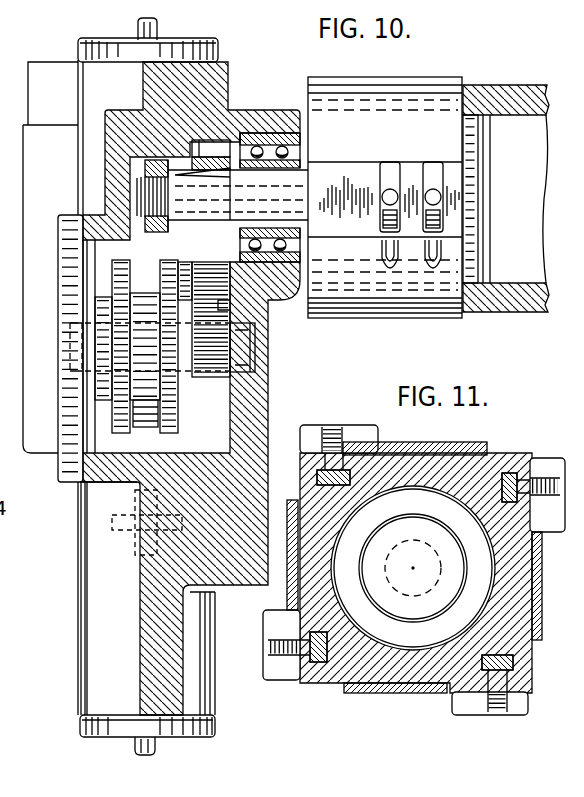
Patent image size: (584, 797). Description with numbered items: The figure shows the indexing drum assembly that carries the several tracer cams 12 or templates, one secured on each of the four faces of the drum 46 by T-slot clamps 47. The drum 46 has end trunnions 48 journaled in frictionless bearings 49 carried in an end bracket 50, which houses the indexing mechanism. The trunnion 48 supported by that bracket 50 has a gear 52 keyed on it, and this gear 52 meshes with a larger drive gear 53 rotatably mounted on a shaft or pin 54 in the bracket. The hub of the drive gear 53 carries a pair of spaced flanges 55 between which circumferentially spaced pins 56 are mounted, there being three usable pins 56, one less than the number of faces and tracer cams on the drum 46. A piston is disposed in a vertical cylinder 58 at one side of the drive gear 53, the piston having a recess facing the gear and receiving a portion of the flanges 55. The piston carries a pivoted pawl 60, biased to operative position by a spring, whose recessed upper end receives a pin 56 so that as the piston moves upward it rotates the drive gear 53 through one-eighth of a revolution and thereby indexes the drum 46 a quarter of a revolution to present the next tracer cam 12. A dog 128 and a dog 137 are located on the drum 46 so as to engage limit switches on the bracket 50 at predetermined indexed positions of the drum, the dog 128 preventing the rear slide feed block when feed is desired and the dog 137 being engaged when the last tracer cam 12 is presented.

In FIG. 11, the tracer cam 12 is at (449, 442).
In FIG. 10, the drum 46 is at (509, 86).
In FIG. 11, the drum 46 is at (500, 460).
In FIG. 11, the T-slot clamp 47 is at (470, 724).
In FIG. 10, the end trunnion 48 is at (280, 186).
In FIG. 11, the end trunnion 48 is at (432, 590).
In FIG. 10, the frictionless bearing 49 is at (270, 146).
In FIG. 10, the end bracket 50 is at (32, 352).
In FIG. 10, the gear 52 is at (218, 146).
In FIG. 10, the drive gear 53 is at (232, 308).
In FIG. 10, the shaft or pin 54 is at (246, 350).
In FIG. 10, the spaced flanges 55 is at (170, 258).
In FIG. 10, the pin 56 is at (143, 427).
In FIG. 10, the vertical cylinder 58 is at (80, 558).
In FIG. 10, the pivoted pawl 60 is at (158, 447).
In FIG. 10, the dog 128 is at (388, 172).
In FIG. 10, the dog 137 is at (432, 172).